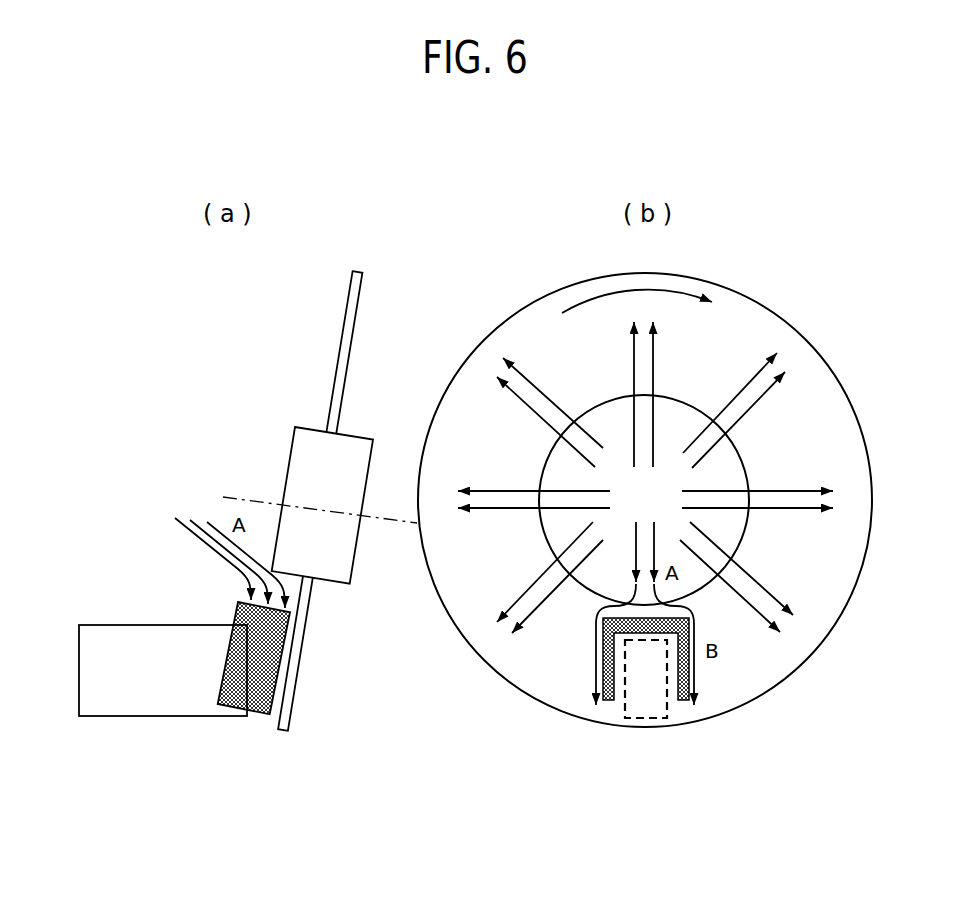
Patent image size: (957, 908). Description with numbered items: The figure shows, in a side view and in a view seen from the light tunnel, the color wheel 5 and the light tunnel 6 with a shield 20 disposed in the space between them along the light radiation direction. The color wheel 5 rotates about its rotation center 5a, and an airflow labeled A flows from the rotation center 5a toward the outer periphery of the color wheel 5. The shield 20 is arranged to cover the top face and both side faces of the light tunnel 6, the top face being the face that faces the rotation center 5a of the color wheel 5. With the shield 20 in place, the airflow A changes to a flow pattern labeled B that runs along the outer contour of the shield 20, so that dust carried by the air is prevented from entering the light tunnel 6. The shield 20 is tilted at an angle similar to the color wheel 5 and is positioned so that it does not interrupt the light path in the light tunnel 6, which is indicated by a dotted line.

The color wheel 5 is at (337, 360).
The rotation center 5a is at (281, 494).
The light tunnel 6 is at (122, 642).
The shield 20 is at (237, 613).